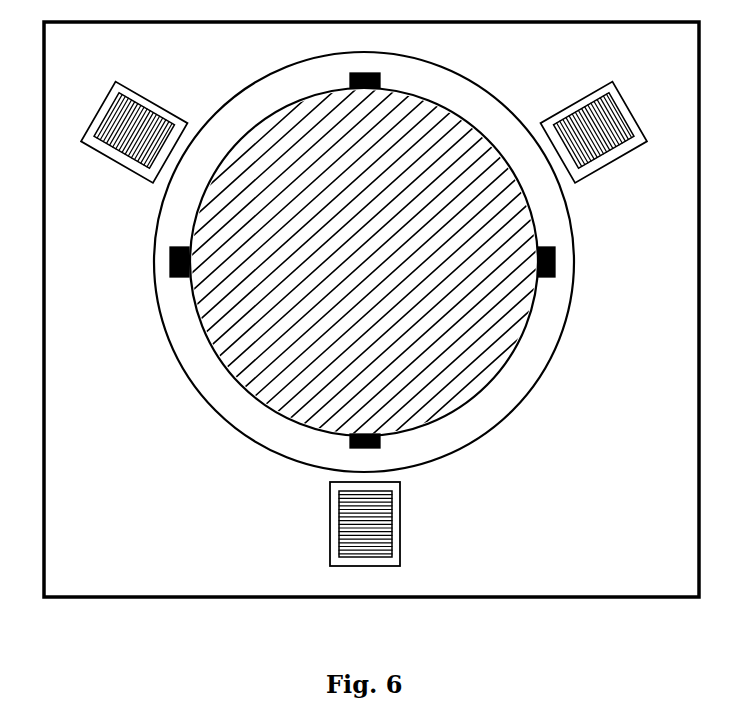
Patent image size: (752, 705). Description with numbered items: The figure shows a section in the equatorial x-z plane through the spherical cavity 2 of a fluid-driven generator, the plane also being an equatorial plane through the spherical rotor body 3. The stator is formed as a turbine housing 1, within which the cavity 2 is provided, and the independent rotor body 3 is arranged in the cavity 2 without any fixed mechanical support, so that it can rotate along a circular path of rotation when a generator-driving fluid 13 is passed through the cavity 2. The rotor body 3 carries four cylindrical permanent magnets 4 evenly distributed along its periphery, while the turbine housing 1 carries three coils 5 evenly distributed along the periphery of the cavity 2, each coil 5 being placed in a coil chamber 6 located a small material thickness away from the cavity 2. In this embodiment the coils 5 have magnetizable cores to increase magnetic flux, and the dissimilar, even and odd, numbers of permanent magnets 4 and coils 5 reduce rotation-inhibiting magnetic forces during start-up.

The turbine housing 1 is at (643, 418).
The cavity 2 is at (152, 240).
The rotor body 3 is at (247, 368).
The permanent magnet 4 is at (358, 88).
The coil 5 is at (113, 143).
The coil chamber 6 is at (115, 90).
The generator-driving fluid 13 is at (270, 111).